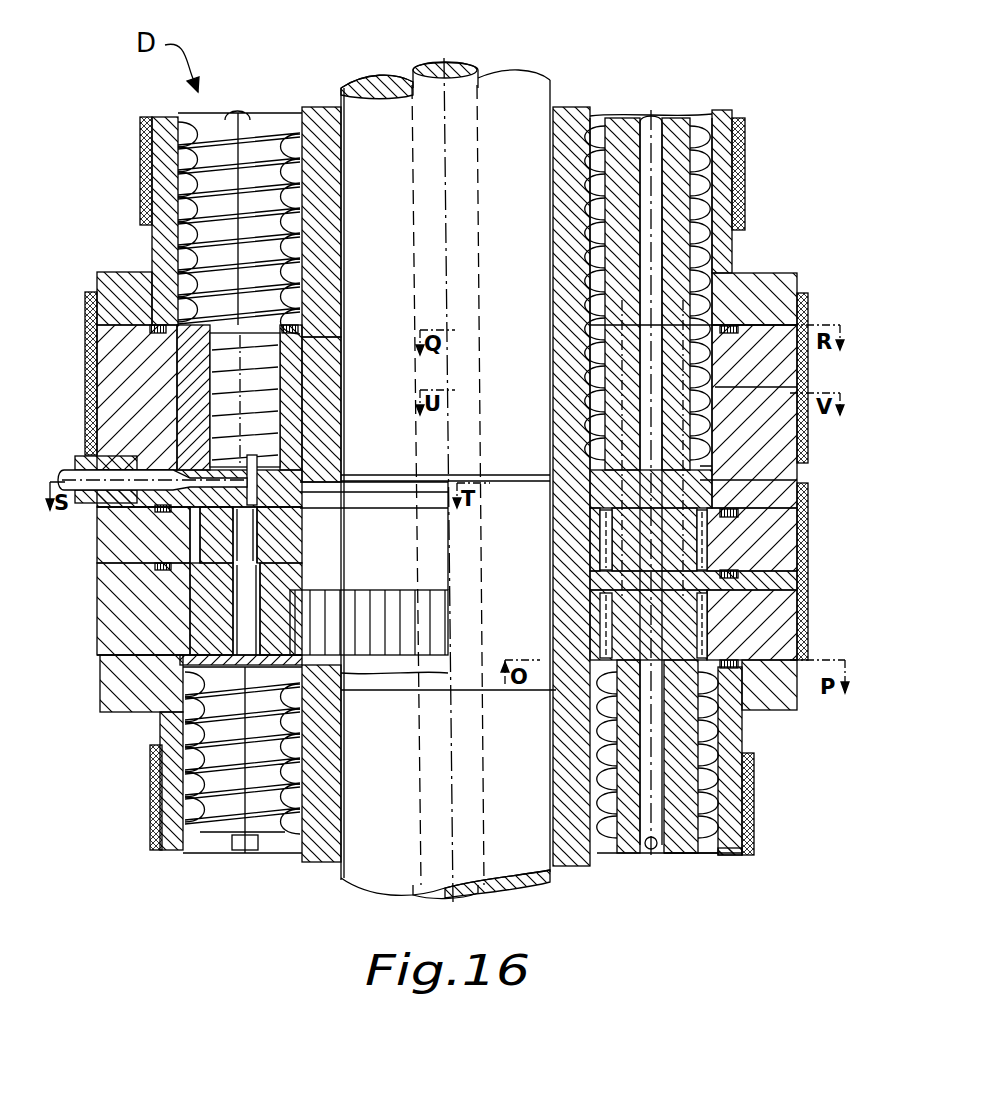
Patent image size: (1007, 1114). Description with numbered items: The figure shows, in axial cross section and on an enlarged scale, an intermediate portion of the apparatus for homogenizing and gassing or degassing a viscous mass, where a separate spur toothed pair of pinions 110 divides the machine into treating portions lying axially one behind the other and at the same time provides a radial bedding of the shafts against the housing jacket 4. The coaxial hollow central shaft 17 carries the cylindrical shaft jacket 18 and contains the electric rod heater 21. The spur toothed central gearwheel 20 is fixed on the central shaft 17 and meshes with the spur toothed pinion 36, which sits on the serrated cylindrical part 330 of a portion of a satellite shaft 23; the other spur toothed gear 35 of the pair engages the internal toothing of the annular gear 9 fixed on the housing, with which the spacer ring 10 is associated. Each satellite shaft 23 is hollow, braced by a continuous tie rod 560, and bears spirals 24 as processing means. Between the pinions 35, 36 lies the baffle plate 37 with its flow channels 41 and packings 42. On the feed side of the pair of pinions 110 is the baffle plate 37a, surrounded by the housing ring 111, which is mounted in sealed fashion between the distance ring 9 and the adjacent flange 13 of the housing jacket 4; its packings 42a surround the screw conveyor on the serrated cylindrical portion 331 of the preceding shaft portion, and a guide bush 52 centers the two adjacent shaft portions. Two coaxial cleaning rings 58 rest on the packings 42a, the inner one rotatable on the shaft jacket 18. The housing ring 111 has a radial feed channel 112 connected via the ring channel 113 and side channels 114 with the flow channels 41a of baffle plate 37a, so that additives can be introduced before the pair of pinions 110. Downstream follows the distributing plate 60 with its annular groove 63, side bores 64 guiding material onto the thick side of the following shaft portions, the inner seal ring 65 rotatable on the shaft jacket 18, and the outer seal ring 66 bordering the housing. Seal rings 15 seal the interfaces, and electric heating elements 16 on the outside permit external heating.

The housing jacket 4 is at (728, 232).
The second internal toothed annular gear 9 is at (770, 540).
The second spacer ring 10 is at (778, 646).
The end flange 13 is at (718, 339).
The seal ring 15 is at (140, 322).
The electric heating element 16 is at (748, 840).
The central shaft 17 is at (512, 93).
The shaft jacket 18 is at (571, 118).
The central gearwheel 20 is at (377, 645).
The electric rod heater 21 is at (447, 77).
The satellite shaft 23 is at (678, 858).
The spiral 24 is at (720, 737).
The spur toothed gear 35 is at (598, 540).
The spur toothed pinion 36 is at (620, 625).
The baffle plate 37 is at (600, 578).
The baffle plate 37a is at (700, 497).
The flow channel 41 is at (300, 553).
The flow channel 41a is at (322, 425).
The packing 42 is at (318, 486).
The packing 42a is at (322, 345).
The guide bush 52 is at (737, 387).
The cleaning ring 58 is at (176, 310).
The distributing plate 60 is at (190, 712).
The annular groove 63 is at (297, 657).
The side bore 64 is at (602, 673).
The inner seal ring 65 is at (343, 732).
The outer seal ring 66 is at (182, 668).
The pair of pinions 110 is at (300, 570).
The housing ring 111 is at (755, 448).
The radial feed channel 112 is at (108, 487).
The ring channel 113 is at (150, 530).
The side channel 114 is at (215, 480).
The serrated cylindrical part 330 is at (780, 593).
The cylindrical portion 331 is at (822, 366).
The tie rod 560 is at (652, 135).